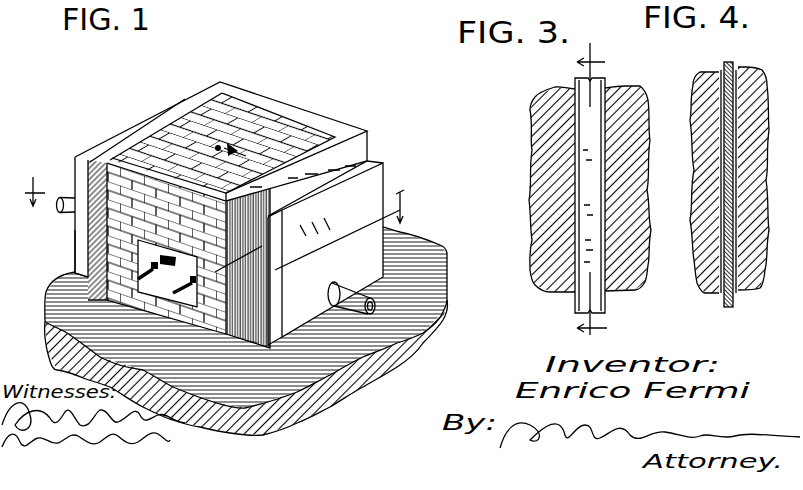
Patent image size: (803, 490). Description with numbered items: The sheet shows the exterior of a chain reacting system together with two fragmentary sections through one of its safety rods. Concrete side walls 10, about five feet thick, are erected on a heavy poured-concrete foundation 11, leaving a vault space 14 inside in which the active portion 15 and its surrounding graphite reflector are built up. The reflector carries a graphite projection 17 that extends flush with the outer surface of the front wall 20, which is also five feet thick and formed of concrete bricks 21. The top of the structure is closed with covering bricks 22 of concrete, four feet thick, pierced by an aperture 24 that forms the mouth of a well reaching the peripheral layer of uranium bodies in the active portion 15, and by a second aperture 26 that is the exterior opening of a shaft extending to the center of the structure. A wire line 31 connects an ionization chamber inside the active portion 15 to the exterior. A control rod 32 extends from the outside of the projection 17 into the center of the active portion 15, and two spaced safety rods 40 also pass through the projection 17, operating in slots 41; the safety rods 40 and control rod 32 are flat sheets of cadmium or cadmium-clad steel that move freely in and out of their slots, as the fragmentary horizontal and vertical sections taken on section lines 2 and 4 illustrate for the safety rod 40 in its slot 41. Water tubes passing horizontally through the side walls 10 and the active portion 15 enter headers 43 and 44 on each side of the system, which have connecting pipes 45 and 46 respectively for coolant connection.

In FIG. 1, the side walls 10 is at (352, 127).
In FIG. 1, the foundation 11 is at (77, 318).
In FIG. 1, the vault space 14 is at (302, 127).
In FIG. 3, the active portion 15 is at (540, 118).
In FIG. 4, the active portion 15 is at (702, 110).
In FIG. 1, the graphite projection 17 is at (160, 280).
In FIG. 1, the front wall 20 is at (117, 193).
In FIG. 1, the concrete bricks 21 is at (72, 165).
In FIG. 1, the covering bricks 22 is at (228, 105).
In FIG. 1, the aperture 24 is at (232, 150).
In FIG. 1, the second aperture 26 is at (218, 145).
In FIG. 1, the wire line 31 is at (238, 264).
In FIG. 1, the control rod 32 is at (160, 255).
In FIG. 1, the safety rods 40 is at (135, 280).
In FIG. 3, the safety rods 40 is at (580, 79).
In FIG. 4, the safety rods 40 is at (727, 63).
In FIG. 3, the slots 41 is at (566, 96).
In FIG. 4, the slots 41 is at (710, 72).
In FIG. 1, the header 43 is at (78, 243).
In FIG. 1, the header 44 is at (368, 261).
In FIG. 1, the connecting pipe 45 is at (70, 214).
In FIG. 1, the connecting pipe 46 is at (338, 302).
In FIG. 1, the section line 2— 2 is at (219, 222).
In FIG. 3, the section line 4— 4 is at (599, 191).